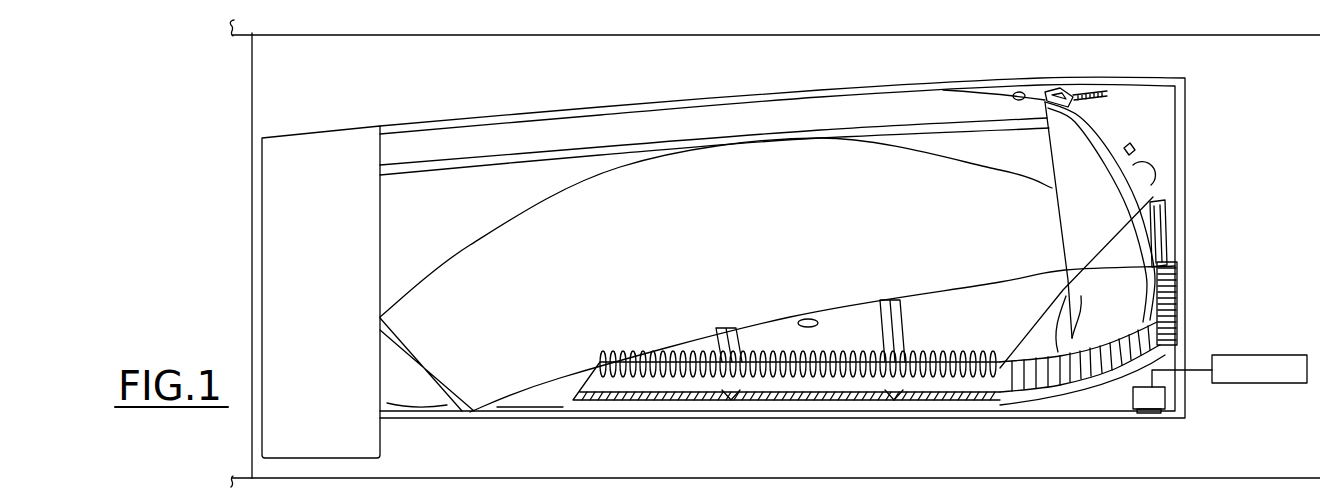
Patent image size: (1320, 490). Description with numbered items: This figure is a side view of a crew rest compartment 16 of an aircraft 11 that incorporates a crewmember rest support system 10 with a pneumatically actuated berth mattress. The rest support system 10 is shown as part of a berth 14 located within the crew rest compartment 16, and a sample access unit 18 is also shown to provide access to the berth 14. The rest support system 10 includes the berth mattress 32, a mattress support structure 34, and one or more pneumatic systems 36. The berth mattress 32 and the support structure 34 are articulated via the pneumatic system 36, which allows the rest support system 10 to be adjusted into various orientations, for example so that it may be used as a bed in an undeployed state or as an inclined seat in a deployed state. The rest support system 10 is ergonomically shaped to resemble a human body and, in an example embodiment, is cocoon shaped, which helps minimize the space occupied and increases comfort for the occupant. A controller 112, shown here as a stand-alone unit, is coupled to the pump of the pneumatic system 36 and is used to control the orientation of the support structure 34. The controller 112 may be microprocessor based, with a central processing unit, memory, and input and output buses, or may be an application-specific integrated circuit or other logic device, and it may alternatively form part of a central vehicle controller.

The crewmember rest support system 10 is at (918, 270).
The aircraft 11 is at (781, 35).
The berth 14 is at (1187, 110).
The crew rest compartment 16 is at (252, 65).
The access unit 18 is at (380, 437).
The pneumatically actuated berth mattress 32 is at (920, 362).
The mattress support structure 34 is at (1042, 393).
The pneumatic system 36 is at (1103, 404).
The controller 112 is at (1293, 385).